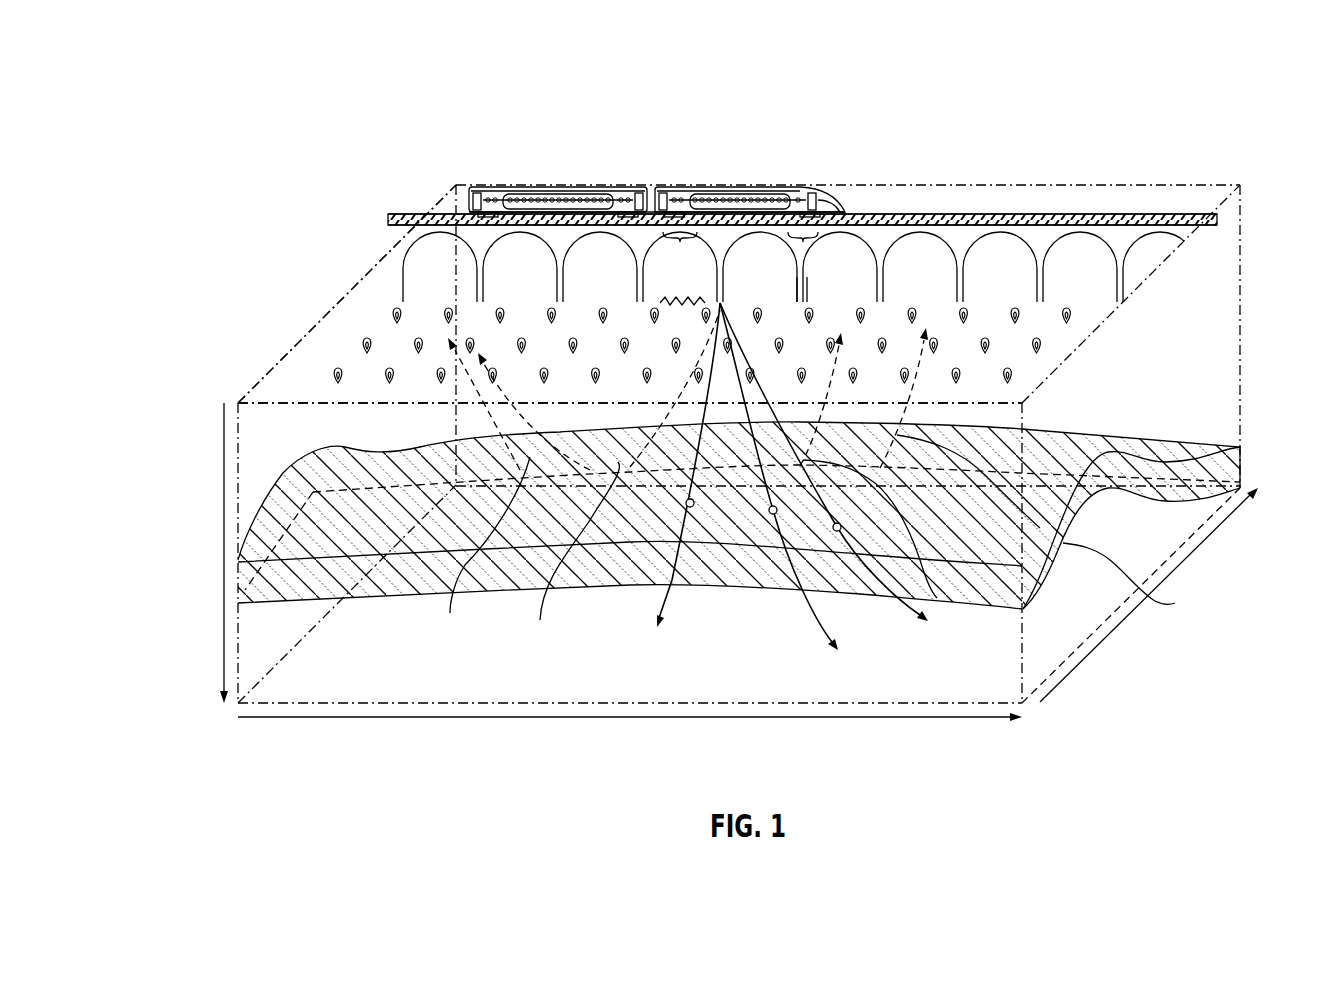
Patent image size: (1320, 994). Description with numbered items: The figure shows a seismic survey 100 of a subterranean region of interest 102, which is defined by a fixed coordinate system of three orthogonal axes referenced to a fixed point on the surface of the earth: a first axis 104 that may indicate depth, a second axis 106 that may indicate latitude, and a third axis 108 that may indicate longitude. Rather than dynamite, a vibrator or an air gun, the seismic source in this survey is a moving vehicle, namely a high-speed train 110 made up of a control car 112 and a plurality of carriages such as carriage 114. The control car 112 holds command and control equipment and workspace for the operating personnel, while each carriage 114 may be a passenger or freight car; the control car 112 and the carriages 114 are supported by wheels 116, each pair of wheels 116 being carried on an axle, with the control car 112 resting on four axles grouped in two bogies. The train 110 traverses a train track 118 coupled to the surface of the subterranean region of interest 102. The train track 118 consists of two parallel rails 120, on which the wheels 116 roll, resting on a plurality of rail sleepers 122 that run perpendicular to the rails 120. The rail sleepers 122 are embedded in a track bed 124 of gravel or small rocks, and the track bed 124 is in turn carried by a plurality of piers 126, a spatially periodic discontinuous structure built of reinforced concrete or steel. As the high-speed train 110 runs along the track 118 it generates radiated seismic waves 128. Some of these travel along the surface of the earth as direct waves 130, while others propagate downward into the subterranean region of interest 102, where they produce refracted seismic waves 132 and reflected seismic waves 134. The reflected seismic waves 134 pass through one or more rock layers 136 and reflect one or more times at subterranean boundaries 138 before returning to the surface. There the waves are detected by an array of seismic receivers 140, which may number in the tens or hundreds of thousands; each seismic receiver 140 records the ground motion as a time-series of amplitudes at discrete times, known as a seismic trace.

The seismic survey 100 is at (814, 58).
The subterranean region of interest 102 is at (266, 372).
The first axis 104 is at (224, 492).
The second axis 106 is at (574, 722).
The third axis 108 is at (1075, 672).
The high-speed train 110 is at (678, 120).
The control car 112 is at (735, 186).
The carriage 114 is at (556, 186).
The wheels 116 is at (741, 267).
The train track 118 is at (1244, 209).
The rails 120 is at (960, 214).
The rail sleepers 122 is at (1120, 214).
The track bed 124 is at (975, 236).
The piers 126 is at (1122, 270).
The radiated seismic waves 128 is at (672, 600).
The direct waves 130 is at (652, 298).
The refracted seismic waves 132 is at (524, 554).
The reflected seismic waves 134 is at (1063, 528).
The rock layers 136 is at (282, 449).
The subterranean boundaries 138 is at (1168, 463).
The seismic receivers 140 is at (317, 380).